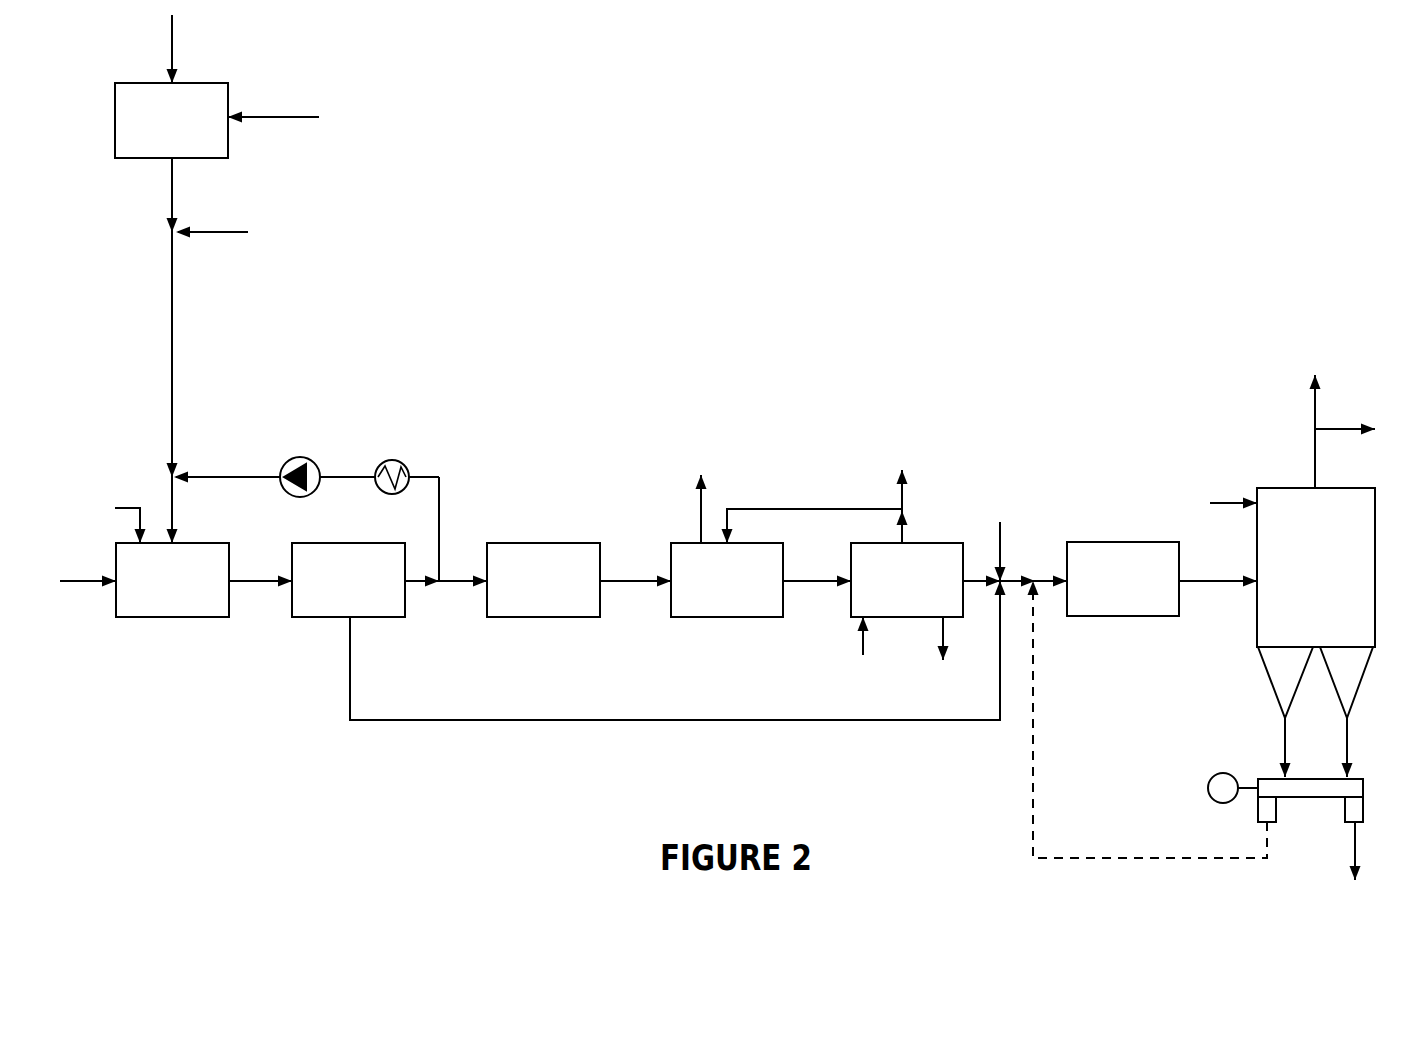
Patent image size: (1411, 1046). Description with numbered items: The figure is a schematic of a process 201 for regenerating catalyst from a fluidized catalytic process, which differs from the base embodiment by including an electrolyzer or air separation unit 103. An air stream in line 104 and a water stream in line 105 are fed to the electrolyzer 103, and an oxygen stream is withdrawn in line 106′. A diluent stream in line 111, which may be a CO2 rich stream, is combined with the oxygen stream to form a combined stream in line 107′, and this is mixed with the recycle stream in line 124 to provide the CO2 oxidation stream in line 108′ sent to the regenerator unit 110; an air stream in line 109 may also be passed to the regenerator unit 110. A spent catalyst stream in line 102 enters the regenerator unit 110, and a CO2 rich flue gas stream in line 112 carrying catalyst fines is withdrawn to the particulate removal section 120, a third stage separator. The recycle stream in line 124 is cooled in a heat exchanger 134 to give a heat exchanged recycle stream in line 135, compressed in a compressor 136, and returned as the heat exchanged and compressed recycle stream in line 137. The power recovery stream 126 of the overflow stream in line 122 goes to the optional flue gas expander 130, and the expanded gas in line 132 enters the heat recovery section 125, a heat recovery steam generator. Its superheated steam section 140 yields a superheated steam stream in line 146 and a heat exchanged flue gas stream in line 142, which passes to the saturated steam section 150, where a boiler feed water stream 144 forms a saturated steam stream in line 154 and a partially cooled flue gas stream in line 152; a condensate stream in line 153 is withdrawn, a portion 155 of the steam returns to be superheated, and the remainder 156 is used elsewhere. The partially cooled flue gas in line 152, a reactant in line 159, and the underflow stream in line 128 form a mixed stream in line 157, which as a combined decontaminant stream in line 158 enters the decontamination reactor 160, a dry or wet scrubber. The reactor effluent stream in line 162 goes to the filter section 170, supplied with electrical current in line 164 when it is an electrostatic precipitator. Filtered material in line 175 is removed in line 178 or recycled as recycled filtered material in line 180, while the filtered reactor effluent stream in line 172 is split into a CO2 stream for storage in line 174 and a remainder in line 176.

The spent catalyst stream line 102 is at (94, 584).
The electrolyzer or air separation unit 103 is at (115, 126).
The air stream line 104 is at (172, 52).
The water stream line 105 is at (281, 117).
The oxygen stream line 106′ is at (172, 200).
The combined stream line 107′ is at (172, 356).
The CO2 oxidation stream line 108′ is at (172, 520).
The air stream line 109 is at (132, 507).
The regenerator unit 110 is at (200, 620).
The diluent stream line 111 is at (212, 232).
The CO2 rich flue gas stream line 112 is at (262, 584).
The particulate removal section 120 is at (384, 542).
The overflow stream line 122 is at (422, 584).
The recycle stream line 124 is at (440, 522).
The heat recovery section 125 is at (791, 664).
The power recovery stream 126 is at (471, 578).
The underflow stream line 128 is at (350, 668).
The flue gas expander 130 is at (567, 542).
The power recovery stream line 132 is at (636, 584).
The heat exchanger 134 is at (391, 468).
The heat exchanged recycle stream line 135 is at (340, 476).
The compressor 136 is at (305, 462).
The heat exchanged and compressed recycle stream line 137 is at (220, 468).
The superheated steam section 140 is at (745, 620).
The heat exchanged CO2 rich flue gas stream line 142 is at (818, 584).
The boiler feed water stream 144 is at (855, 640).
The superheated steam stream line 146 is at (700, 527).
The saturated steam section 150 is at (851, 548).
The partially cooled CO2 rich flue gas stream line 152 is at (985, 585).
The condensate stream line 153 is at (940, 633).
The saturated steam stream line 154 is at (905, 528).
The portion of saturated steam stream 155 is at (778, 512).
The remainder of saturated steam stream 156 is at (905, 487).
The mixed stream line 157 is at (1013, 572).
The combined decontaminant stream line 158 is at (1048, 586).
The reactant line 159 is at (1000, 530).
The decontamination reactor 160 is at (1152, 617).
The reactor effluent stream line 162 is at (1233, 579).
The electrical current line 164 is at (1228, 505).
The filter section 170 is at (1253, 648).
The filtered reactor effluent stream line 172 is at (1318, 470).
The CO2 stream for storage line 174 is at (1312, 415).
The remainder of filtered reactor effluent stream line 176 is at (1340, 427).
The filtered material line 175 is at (1283, 750).
The filtered material removal line 178 is at (1358, 848).
The recycled filtered material line 180 is at (1213, 857).
The process 201 is at (612, 245).